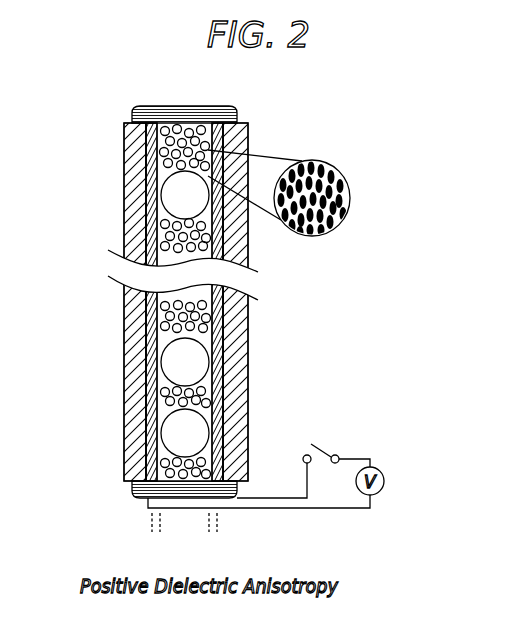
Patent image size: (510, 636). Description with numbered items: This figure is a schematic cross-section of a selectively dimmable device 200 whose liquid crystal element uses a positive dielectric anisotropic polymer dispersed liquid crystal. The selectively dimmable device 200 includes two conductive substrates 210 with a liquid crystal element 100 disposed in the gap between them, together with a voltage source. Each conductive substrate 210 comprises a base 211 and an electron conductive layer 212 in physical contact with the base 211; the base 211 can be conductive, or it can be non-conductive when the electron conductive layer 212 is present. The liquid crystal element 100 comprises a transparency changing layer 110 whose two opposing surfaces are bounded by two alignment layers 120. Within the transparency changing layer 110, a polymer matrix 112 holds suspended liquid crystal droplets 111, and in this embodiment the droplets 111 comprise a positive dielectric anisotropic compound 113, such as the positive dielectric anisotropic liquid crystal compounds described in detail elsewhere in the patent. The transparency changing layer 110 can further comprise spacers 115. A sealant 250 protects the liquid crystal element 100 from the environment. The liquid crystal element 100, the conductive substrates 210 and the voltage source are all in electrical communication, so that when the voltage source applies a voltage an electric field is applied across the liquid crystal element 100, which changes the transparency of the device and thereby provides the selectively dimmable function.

The liquid crystal element 100 is at (210, 100).
The transparency changing layer 110 is at (220, 533).
The liquid crystal droplets 111 is at (210, 328).
The polymer matrix 112 is at (200, 402).
The positive dielectric anisotropic compound 113 is at (364, 200).
The spacers 115 is at (190, 428).
The alignment layers 120 is at (146, 536).
The selectively dimmable device 200 is at (103, 493).
The conductive substrates 210 is at (160, 100).
The base 211 is at (123, 360).
The electron conductive layer 212 is at (137, 403).
The sealant 250 is at (118, 107).